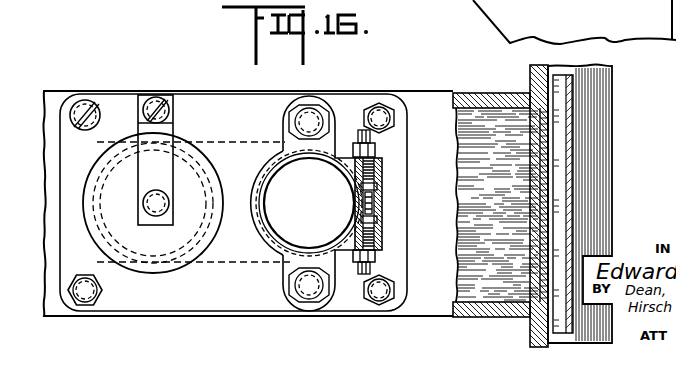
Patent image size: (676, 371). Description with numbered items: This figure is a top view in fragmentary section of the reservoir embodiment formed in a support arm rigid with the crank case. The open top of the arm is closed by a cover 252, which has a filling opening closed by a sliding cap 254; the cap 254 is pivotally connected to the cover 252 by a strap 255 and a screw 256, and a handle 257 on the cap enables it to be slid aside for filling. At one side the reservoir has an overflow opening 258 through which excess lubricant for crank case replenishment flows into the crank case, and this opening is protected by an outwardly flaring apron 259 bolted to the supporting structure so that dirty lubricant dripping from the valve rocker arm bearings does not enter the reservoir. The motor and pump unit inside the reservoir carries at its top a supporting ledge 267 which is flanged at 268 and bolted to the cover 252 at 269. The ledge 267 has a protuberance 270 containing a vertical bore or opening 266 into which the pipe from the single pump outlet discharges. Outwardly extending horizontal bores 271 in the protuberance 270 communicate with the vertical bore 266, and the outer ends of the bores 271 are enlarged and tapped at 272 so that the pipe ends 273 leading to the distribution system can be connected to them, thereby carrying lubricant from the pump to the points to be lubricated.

The cover 252 is at (210, 305).
The sliding cap 254 is at (197, 174).
The strap 255 is at (157, 160).
The screw 256 is at (154, 112).
The handle 257 is at (155, 210).
The overflow opening 258 is at (551, 140).
The apron 259 is at (573, 195).
The opening 266 is at (376, 200).
The supporting ledge 267 is at (287, 148).
The flange 268 is at (330, 105).
The bolts 269 is at (292, 112).
The protuberance 270 is at (383, 195).
The horizontal bores 271 is at (378, 216).
The tapped enlargement 272 is at (375, 238).
The pipe ends 273 is at (368, 267).